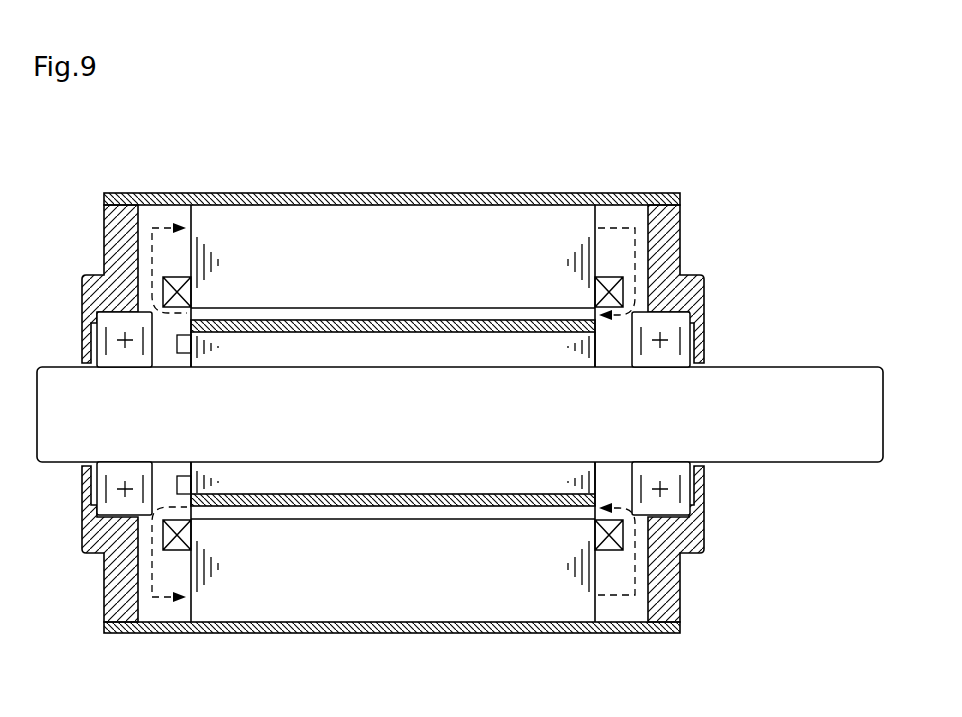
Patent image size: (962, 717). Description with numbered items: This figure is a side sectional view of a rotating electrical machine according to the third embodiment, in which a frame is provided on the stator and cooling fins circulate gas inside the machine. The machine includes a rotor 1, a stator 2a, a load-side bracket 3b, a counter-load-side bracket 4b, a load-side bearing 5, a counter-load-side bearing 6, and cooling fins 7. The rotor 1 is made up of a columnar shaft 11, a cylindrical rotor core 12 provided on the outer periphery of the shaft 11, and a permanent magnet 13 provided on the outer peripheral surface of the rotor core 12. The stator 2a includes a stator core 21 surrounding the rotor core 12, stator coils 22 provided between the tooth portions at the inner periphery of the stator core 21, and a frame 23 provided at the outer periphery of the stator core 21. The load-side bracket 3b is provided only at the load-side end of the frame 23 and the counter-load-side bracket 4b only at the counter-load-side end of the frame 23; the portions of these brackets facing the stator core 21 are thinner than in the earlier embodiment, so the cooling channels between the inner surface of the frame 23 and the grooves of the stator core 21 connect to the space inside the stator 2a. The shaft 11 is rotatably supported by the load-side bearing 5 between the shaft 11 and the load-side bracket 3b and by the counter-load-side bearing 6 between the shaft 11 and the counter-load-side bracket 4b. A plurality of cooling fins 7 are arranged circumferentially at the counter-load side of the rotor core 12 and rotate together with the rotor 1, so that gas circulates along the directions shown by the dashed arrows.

The rotor 1 is at (820, 367).
The stator 2a is at (498, 220).
The load-side bracket 3b is at (662, 202).
The counter-load-side bracket 4b is at (126, 200).
The load-side bearing 5 is at (673, 508).
The counter-load-side bearing 6 is at (117, 507).
The cooling fins 7 is at (184, 343).
The shaft 11 is at (735, 368).
The rotor core 12 is at (382, 478).
The permanent magnet 13 is at (438, 507).
The stator core 21 is at (372, 215).
The stator coils 22 is at (177, 282).
The frame 23 is at (437, 205).